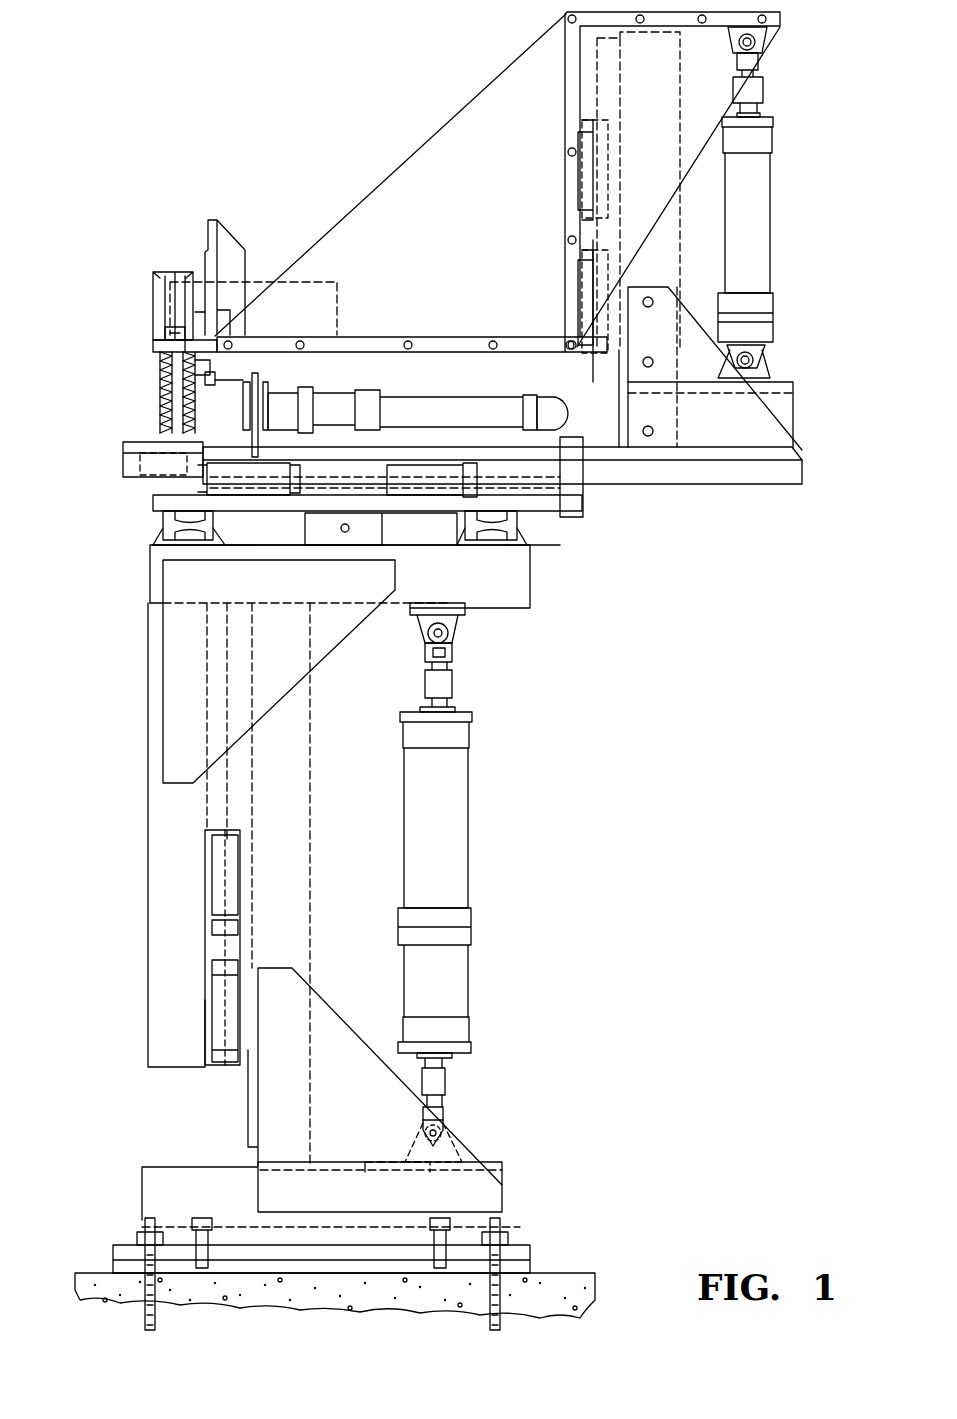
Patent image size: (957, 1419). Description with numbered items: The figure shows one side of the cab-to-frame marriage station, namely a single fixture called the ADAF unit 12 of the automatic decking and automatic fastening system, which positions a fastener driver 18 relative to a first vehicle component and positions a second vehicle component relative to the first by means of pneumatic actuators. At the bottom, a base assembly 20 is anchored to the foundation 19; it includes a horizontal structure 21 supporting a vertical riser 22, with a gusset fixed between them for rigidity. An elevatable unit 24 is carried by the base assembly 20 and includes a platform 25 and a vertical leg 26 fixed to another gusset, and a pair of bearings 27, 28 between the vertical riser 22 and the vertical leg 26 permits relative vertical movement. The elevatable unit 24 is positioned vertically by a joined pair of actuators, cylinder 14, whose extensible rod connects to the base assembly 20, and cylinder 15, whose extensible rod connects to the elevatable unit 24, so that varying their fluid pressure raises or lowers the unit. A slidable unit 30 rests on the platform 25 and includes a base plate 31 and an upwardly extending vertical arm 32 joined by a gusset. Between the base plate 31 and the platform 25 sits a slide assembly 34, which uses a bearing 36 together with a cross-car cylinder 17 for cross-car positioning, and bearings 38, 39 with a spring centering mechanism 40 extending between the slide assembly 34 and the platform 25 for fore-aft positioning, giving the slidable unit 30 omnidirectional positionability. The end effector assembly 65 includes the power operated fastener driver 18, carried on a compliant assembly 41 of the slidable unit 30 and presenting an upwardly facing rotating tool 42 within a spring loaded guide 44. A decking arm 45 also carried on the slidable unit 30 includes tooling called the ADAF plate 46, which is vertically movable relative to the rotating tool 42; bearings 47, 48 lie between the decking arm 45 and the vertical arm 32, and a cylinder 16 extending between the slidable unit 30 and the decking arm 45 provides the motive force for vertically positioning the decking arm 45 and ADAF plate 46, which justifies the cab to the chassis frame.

The ADAF unit 12 is at (545, 740).
The cylinder 14 is at (468, 960).
The cylinder 15 is at (468, 830).
The cylinder 16 is at (770, 235).
The cross-car cylinder 17 is at (540, 500).
The fastener driver 18 is at (452, 405).
The foundation 19 is at (560, 1275).
The base assembly 20 is at (520, 1245).
The horizontal structure 21 is at (190, 1160).
The vertical riser 22 is at (305, 872).
The elevatable unit 24 is at (148, 577).
The platform 25 is at (525, 600).
The vertical leg 26 is at (148, 822).
The bearing 27 is at (220, 877).
The bearing 28 is at (220, 1012).
The slidable unit 30 is at (722, 476).
The base plate 31 is at (800, 474).
The vertical arm 32 is at (668, 230).
The slide assembly 34 is at (148, 501).
The bearing 36 is at (427, 487).
The bearing 38 is at (175, 522).
The bearing 39 is at (505, 528).
The spring centering mechanism 40 is at (320, 537).
The compliant assembly 41 is at (277, 425).
The rotating tool 42 is at (168, 333).
The spring loaded guide 44 is at (155, 290).
The decking arm 45 is at (375, 340).
The ADAF plate 46 is at (233, 240).
The bearing 47 is at (598, 160).
The bearing 48 is at (598, 298).
The end effector assembly 65 is at (150, 368).